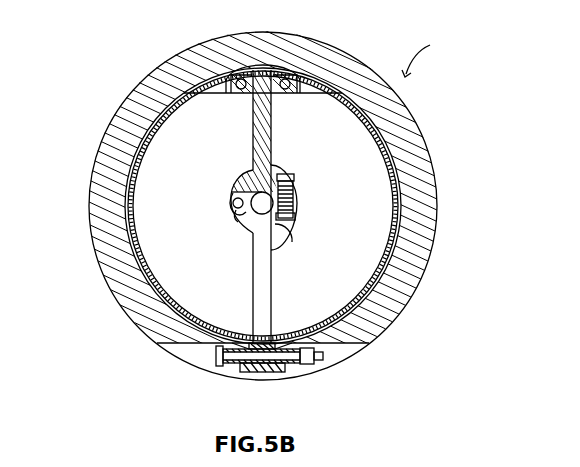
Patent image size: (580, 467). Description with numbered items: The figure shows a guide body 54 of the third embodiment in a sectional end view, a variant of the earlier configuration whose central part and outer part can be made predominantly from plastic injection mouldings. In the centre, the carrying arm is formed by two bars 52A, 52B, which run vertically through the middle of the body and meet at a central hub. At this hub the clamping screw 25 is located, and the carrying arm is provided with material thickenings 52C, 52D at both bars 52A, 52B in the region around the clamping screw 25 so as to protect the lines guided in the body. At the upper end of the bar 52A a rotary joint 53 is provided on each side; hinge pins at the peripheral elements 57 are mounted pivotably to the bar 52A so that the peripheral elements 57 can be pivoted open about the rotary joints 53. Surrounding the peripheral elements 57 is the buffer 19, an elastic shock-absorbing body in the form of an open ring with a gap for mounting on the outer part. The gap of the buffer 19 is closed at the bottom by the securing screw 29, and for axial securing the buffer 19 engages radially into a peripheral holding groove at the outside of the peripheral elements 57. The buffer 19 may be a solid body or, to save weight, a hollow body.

The buffer 19 is at (126, 120).
The clamping screw 25 is at (294, 203).
The securing screw 29 is at (297, 360).
The bar 52A is at (254, 132).
The bar 52B is at (258, 279).
The material thickening 52C is at (283, 173).
The material thickening 52D is at (287, 237).
The rotary joint 53 is at (233, 104).
The guide body 54 is at (437, 51).
The peripheral element 57 is at (136, 234).